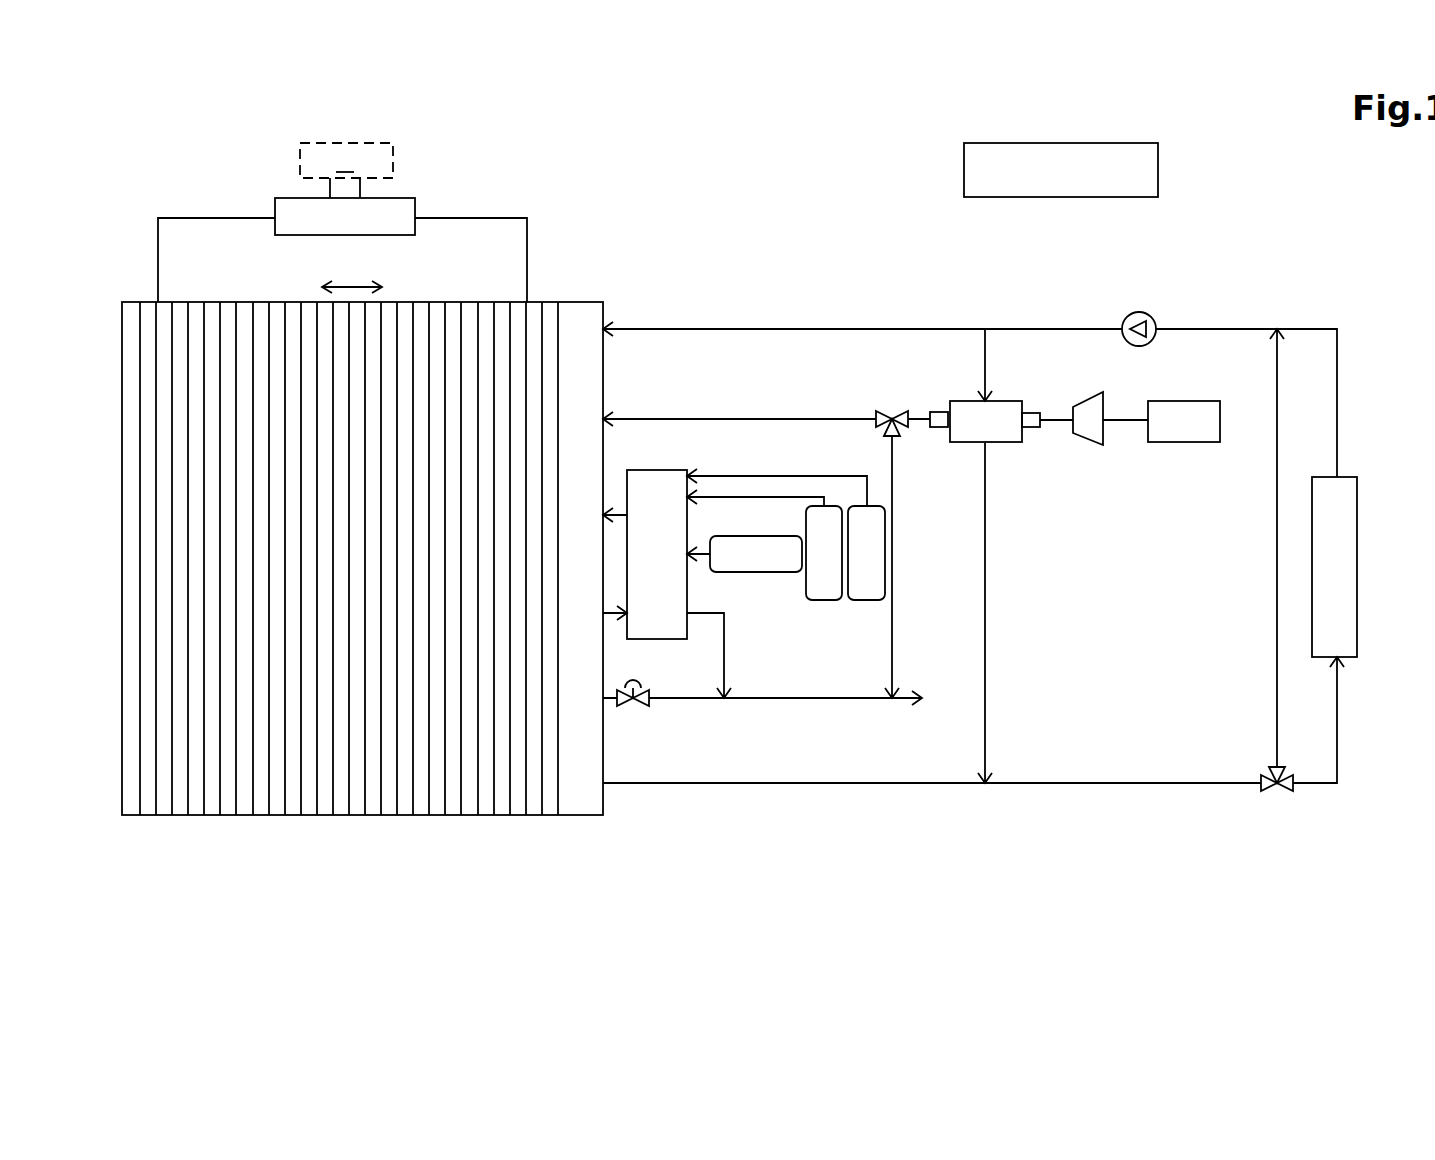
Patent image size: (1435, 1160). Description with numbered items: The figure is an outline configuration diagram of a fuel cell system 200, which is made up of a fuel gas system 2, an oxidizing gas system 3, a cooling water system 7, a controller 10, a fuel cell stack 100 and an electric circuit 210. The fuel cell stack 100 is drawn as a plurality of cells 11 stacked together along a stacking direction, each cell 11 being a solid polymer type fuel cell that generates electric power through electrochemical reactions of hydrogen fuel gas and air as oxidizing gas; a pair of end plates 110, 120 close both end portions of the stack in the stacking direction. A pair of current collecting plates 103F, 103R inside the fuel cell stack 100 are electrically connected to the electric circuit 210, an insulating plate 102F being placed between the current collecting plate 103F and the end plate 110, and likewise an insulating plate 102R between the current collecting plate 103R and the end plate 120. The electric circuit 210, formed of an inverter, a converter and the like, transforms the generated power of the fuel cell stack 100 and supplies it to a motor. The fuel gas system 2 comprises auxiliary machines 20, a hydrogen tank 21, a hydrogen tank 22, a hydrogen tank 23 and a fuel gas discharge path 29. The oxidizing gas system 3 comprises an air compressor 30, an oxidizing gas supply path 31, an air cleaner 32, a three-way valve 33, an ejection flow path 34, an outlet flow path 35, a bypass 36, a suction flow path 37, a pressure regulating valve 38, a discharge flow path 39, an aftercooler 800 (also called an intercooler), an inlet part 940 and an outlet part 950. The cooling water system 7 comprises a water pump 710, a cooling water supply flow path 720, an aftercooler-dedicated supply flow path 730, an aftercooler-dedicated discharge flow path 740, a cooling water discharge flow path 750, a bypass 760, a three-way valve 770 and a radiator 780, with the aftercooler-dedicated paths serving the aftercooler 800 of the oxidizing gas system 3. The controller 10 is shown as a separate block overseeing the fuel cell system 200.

The fuel cell stack 100 is at (519, 901).
The end plate 110 is at (133, 815).
The insulating plate 102F is at (151, 815).
The current collecting plate 103F is at (168, 815).
The cell 11 is at (327, 815).
The current collecting plate 103R is at (533, 815).
The insulating plate 102R is at (550, 815).
The end plate 120 is at (580, 815).
The electric circuit 210 is at (402, 198).
The controller 10 is at (1050, 140).
The fuel gas system 2 is at (790, 466).
The auxiliary machines 20 is at (656, 470).
The hydrogen tank 21 is at (763, 573).
The hydrogen tank 22 is at (822, 603).
The hydrogen tank 23 is at (866, 603).
The fuel gas discharge path 29 is at (724, 668).
The oxidizing gas supply path 31 is at (735, 419).
The three-way valve 33 is at (880, 410).
The outlet part 950 is at (940, 412).
The outlet flow path 35 is at (922, 425).
The aftercooler 800 is at (1003, 443).
The inlet part 940 is at (1037, 430).
The ejection flow path 34 is at (1060, 415).
The air compressor 30 is at (1098, 405).
The suction flow path 37 is at (1123, 445).
The air cleaner 32 is at (1178, 443).
The oxidizing gas system 3 is at (1233, 391).
The bypass 36 is at (892, 615).
The pressure regulating valve 38 is at (636, 712).
The discharge flow path 39 is at (745, 700).
The fuel cell system 200 is at (1287, 203).
The cooling water supply flow path 720 is at (810, 329).
The water pump 710 is at (1137, 312).
The aftercooler-dedicated supply flow path 730 is at (988, 355).
The aftercooler-dedicated discharge flow path 740 is at (988, 638).
The cooling water discharge flow path 750 is at (917, 787).
The bypass 760 is at (1277, 588).
The three-way valve 770 is at (1272, 797).
The cooling water system 7 is at (1366, 369).
The radiator 780 is at (1357, 550).